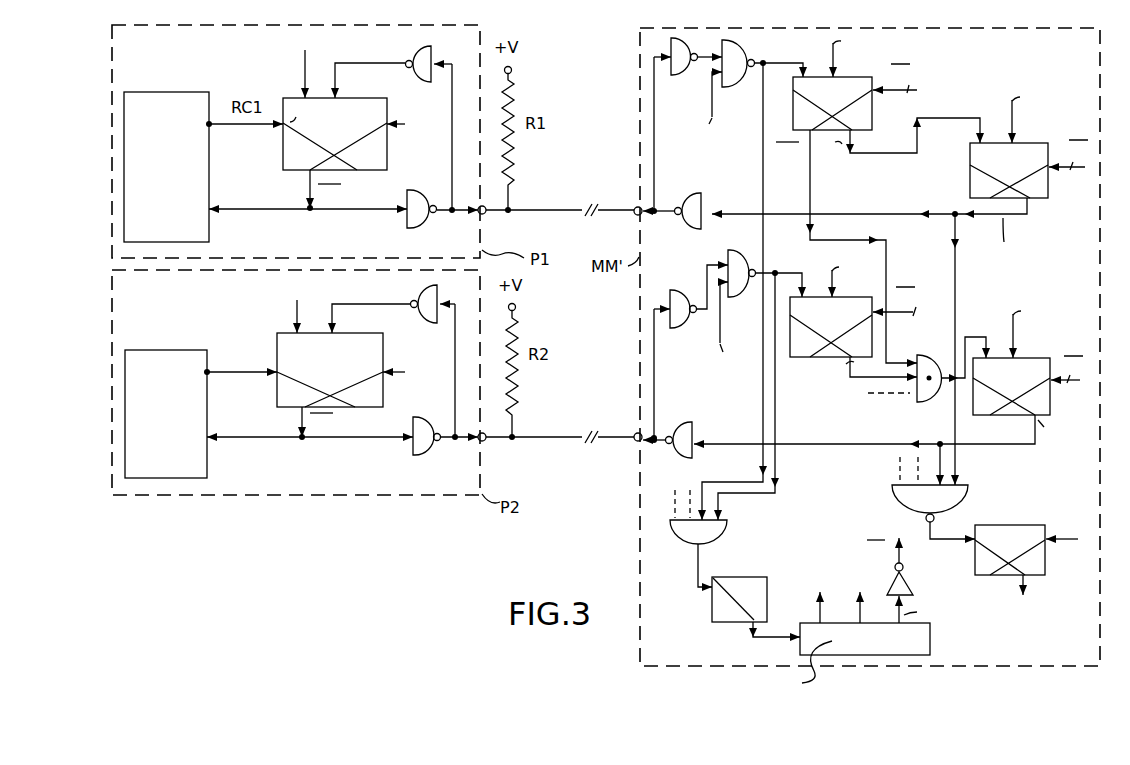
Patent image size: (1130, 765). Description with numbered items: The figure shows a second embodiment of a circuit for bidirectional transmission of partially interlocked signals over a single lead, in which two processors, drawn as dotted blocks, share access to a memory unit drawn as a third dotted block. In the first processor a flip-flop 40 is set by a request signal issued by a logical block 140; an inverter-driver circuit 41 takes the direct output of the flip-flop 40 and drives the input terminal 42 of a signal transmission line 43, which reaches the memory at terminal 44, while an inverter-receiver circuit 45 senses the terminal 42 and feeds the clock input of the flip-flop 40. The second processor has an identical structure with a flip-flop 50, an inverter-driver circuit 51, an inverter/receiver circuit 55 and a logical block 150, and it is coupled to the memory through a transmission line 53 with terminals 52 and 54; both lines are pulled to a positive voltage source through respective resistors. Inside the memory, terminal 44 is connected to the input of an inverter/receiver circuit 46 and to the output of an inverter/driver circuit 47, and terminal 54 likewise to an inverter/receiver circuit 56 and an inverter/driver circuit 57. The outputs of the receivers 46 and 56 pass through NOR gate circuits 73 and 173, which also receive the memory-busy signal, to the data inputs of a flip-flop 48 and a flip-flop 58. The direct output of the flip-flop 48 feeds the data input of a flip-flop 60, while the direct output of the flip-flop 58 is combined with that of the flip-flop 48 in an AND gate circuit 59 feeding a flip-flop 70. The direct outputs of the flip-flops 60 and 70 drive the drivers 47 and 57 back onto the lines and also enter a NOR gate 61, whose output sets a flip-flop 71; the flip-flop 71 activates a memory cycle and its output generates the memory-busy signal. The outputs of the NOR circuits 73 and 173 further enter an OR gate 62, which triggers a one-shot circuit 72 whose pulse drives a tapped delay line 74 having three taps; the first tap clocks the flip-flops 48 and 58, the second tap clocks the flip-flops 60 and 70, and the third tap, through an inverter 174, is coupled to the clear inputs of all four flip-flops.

The logical block 140 is at (150, 92).
The flip-flop 40 is at (387, 141).
The inverter-receiver circuit 45 is at (432, 52).
The inverter-driver circuit 41 is at (427, 228).
The input terminal 42 is at (485, 214).
The signal transmission line 43 is at (556, 206).
The terminal 44 is at (635, 209).
The logical block 150 is at (151, 350).
The flip-flop 50 is at (383, 388).
The inverter/receiver circuit 55 is at (440, 292).
The inverter-driver circuit 51 is at (430, 455).
The terminal 52 is at (485, 441).
The transmission line 53 is at (555, 437).
The terminal 54 is at (634, 433).
The inverter/receiver circuit 46 is at (678, 77).
The NOR gate circuit 73 is at (737, 87).
The flip-flop 48 is at (873, 112).
The flip-flop 60 is at (1040, 142).
The inverter/driver circuit 47 is at (684, 230).
The inverter/receiver circuit 56 is at (683, 330).
The NOR gate circuit 173 is at (745, 298).
The flip-flop 58 is at (860, 297).
The AND gate circuit 59 is at (930, 353).
The flip-flop 70 is at (1040, 357).
The inverter/driver circuit 57 is at (690, 429).
The NOR gate 61 is at (890, 497).
The OR gate 62 is at (722, 533).
The one-shot circuit 72 is at (712, 607).
The inverter 174 is at (913, 581).
The tapped delay line 74 is at (931, 641).
The flip-flop 71 is at (1036, 526).